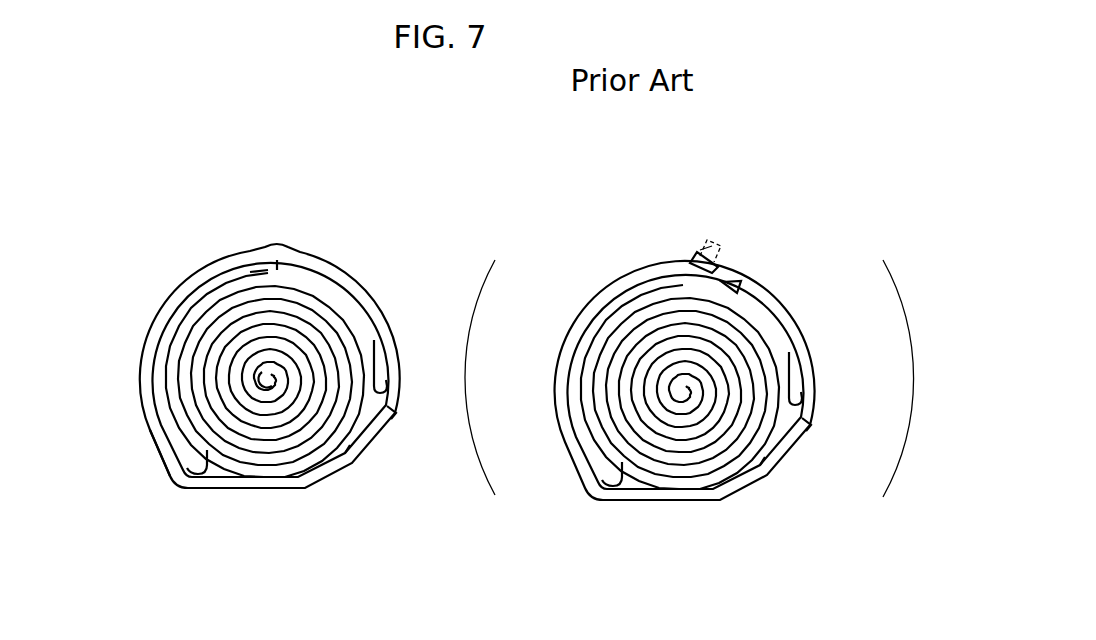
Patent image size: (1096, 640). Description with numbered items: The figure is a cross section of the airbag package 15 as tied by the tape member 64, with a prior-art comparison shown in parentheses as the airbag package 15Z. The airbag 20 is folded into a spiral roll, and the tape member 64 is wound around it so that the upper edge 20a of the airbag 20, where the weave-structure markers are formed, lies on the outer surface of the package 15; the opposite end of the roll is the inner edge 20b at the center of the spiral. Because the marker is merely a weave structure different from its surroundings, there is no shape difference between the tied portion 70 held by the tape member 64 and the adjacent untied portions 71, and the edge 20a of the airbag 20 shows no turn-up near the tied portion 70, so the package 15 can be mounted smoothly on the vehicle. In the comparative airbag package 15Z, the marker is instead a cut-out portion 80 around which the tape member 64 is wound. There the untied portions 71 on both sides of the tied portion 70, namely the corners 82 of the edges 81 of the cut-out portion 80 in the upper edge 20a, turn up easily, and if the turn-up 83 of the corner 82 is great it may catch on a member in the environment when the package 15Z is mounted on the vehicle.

The airbag package 15 is at (177, 268).
The airbag package 15Z is at (578, 270).
The airbag 20 is at (177, 367).
The upper edge 20a is at (290, 268).
The inner end of spiral spring 20b is at (275, 383).
The tape member 64 is at (152, 425).
The tied portion 70 is at (282, 261).
The untied portion 71 is at (277, 243).
The cut-out portion 80 is at (720, 292).
The edge 81 is at (712, 223).
The corner 82 is at (708, 244).
The turn-up 83 is at (725, 237).